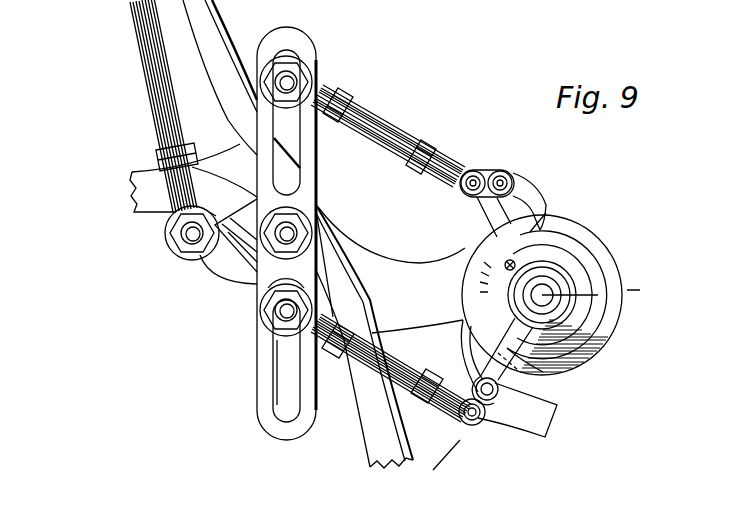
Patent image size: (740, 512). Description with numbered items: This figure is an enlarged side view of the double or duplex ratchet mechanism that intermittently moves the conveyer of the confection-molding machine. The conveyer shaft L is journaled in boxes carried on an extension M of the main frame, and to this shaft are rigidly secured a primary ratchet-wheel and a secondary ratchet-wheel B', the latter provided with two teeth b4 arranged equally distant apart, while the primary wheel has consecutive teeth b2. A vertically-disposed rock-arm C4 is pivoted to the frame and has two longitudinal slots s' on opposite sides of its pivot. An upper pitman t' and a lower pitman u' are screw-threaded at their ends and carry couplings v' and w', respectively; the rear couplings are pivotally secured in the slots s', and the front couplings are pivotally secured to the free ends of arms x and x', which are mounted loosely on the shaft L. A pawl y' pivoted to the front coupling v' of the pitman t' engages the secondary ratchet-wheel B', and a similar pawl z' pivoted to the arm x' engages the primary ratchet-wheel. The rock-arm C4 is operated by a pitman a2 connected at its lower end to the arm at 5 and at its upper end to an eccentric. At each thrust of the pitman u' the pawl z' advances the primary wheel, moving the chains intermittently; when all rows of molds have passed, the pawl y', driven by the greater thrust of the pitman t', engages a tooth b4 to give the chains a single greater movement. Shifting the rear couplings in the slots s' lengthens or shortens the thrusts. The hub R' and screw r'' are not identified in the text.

The pitman a2 is at (141, 37).
The connection point of pitman to rock-arm 5 is at (164, 254).
The rock-arm C4 is at (256, 283).
The longitudinal slots s' is at (285, 233).
The upper pitman t' is at (412, 141).
The couplings v' is at (398, 114).
The pawl y' is at (533, 193).
The arm x is at (477, 217).
The consecutive teeth b2 is at (482, 233).
The teeth b4 is at (545, 213).
The secondary ratchet-wheel B' is at (551, 295).
The hub R' is at (542, 284).
The shaft L is at (598, 292).
The extension M is at (391, 270).
The screw r'' is at (506, 280).
The pawl z' is at (482, 361).
The arm x' is at (503, 358).
The couplings w' is at (398, 363).
The lower pitman u' is at (386, 385).